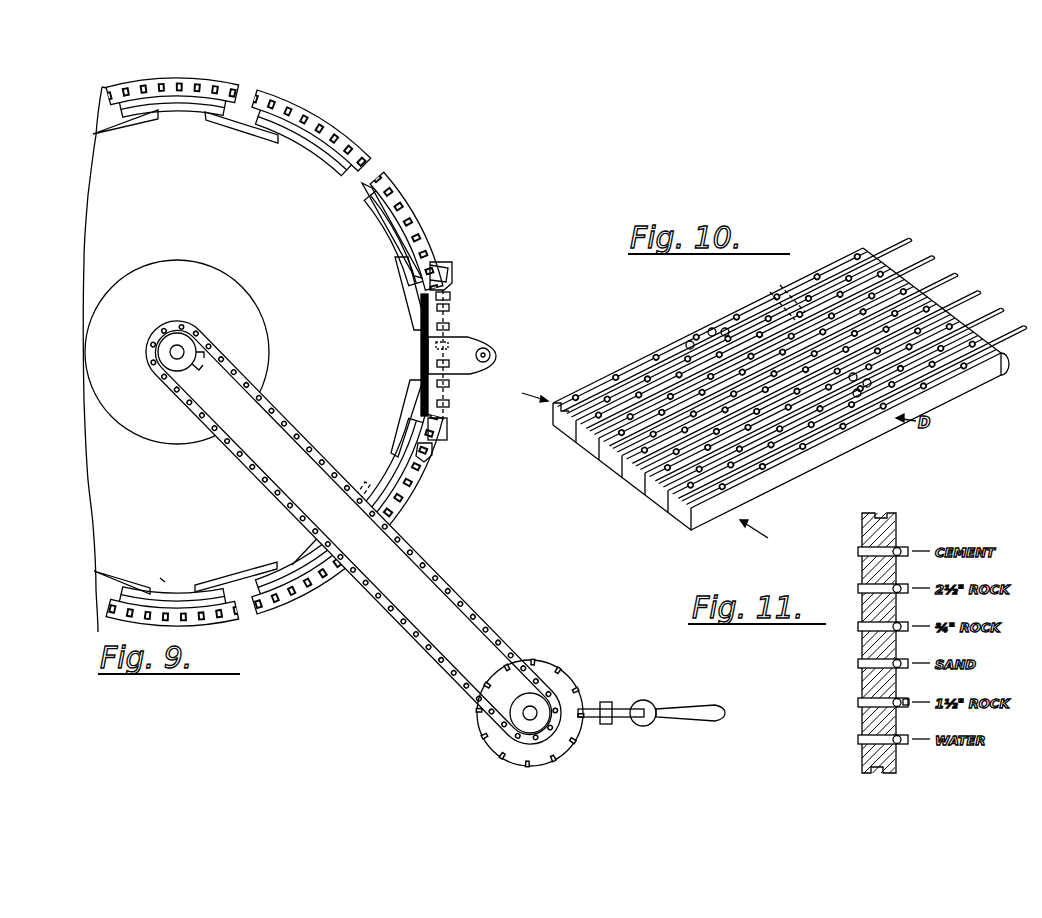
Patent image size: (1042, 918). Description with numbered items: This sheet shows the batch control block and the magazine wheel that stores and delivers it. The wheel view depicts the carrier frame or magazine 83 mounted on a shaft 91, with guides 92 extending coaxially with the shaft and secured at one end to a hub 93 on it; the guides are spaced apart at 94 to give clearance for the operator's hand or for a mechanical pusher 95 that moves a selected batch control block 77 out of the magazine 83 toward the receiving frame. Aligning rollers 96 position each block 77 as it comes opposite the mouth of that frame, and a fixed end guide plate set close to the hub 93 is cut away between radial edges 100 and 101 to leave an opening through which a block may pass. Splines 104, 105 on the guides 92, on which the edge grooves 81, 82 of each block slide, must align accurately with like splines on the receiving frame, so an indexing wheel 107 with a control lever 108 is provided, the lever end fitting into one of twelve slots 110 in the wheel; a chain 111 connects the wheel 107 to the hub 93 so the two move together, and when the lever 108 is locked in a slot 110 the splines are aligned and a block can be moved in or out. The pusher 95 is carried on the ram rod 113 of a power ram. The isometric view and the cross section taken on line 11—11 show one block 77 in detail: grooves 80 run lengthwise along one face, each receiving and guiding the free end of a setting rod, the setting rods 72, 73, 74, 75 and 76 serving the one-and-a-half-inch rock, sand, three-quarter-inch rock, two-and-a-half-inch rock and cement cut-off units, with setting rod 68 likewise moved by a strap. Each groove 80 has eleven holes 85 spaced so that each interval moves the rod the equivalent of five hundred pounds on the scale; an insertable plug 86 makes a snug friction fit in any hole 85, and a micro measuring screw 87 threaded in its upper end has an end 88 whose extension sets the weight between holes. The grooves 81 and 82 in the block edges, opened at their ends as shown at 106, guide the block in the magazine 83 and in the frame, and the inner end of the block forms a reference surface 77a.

In FIG. 10, the section line 11 is at (644, 462).
In FIG. 10, the setting rod 68 is at (1002, 324).
In FIG. 10, the setting rod 72 is at (1000, 306).
In FIG. 10, the setting rod 73 is at (980, 290).
In FIG. 10, the setting rod 74 is at (950, 272).
In FIG. 10, the setting rod 75 is at (924, 256).
In FIG. 10, the setting rod 76 is at (905, 244).
In FIG. 9, the batch control block 77 is at (181, 108).
In FIG. 10, the batch control block 77 is at (590, 388).
In FIG. 11, the batch control block 77 is at (897, 521).
In FIG. 10, the reference surface 77a is at (1000, 336).
In FIG. 10, the groove 80 is at (625, 466).
In FIG. 11, the groove 80 is at (917, 714).
In FIG. 10, the groove 81 is at (685, 528).
In FIG. 11, the groove 81 is at (877, 770).
In FIG. 10, the groove 82 is at (553, 424).
In FIG. 11, the groove 82 is at (881, 515).
In FIG. 9, the carrier frame 83 is at (346, 331).
In FIG. 10, the hole 85 is at (772, 296).
In FIG. 11, the hole 85 is at (856, 553).
In FIG. 9, the plug 86 is at (197, 92).
In FIG. 10, the plug 86 is at (870, 386).
In FIG. 11, the plug 86 is at (902, 592).
In FIG. 10, the micro measuring screw 87 is at (857, 396).
In FIG. 11, the micro measuring screw 87 is at (902, 547).
In FIG. 10, the end of screw 88 is at (858, 378).
In FIG. 9, the shaft 91 is at (172, 360).
In FIG. 9, the guide 92 is at (250, 132).
In FIG. 9, the hub 93 is at (86, 324).
In FIG. 9, the spacing 94 is at (160, 578).
In FIG. 9, the pusher 95 is at (466, 346).
In FIG. 9, the aligning roller 96 is at (442, 268).
In FIG. 9, the radial edge 100 is at (454, 274).
In FIG. 9, the radial edge 101 is at (440, 455).
In FIG. 9, the spline 104 is at (451, 295).
In FIG. 9, the spline 105 is at (450, 404).
In FIG. 10, the opened groove end 106 is at (1000, 354).
In FIG. 9, the indexing wheel 107 is at (566, 690).
In FIG. 9, the control lever 108 is at (596, 707).
In FIG. 9, the slot 110 is at (556, 672).
In FIG. 9, the chain 111 is at (492, 626).
In FIG. 9, the ram rod 113 is at (492, 354).